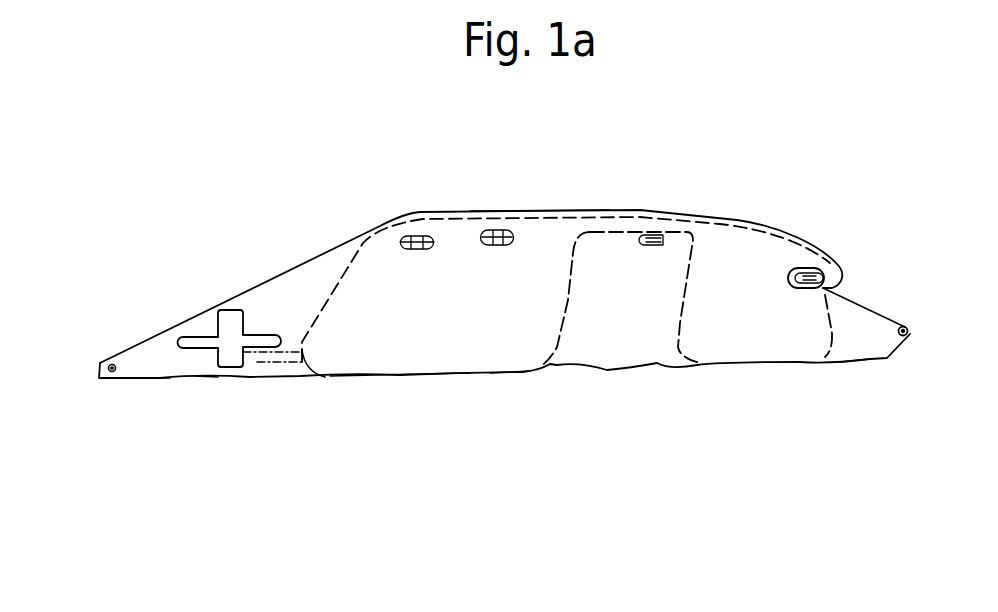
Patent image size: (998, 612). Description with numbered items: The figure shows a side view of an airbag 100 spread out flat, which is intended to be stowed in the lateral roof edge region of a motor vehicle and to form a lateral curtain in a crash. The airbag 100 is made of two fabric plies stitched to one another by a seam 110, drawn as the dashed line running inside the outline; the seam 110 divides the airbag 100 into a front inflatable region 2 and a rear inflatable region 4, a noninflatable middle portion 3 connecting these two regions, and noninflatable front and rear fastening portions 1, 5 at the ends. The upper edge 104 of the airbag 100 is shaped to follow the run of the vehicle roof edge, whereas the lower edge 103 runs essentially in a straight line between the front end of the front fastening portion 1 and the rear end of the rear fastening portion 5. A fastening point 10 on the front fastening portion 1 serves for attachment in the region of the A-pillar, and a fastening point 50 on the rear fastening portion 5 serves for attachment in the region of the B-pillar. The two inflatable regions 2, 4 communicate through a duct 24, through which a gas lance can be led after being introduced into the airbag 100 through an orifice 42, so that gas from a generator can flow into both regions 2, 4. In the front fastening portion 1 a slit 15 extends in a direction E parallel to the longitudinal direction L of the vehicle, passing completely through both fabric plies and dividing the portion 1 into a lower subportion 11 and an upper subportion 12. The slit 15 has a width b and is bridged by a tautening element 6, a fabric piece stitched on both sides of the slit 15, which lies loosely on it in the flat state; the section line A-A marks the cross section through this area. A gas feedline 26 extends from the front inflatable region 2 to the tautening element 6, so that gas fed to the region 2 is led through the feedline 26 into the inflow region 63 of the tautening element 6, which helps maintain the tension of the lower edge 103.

The airbag 100 is at (465, 320).
The upper edge 104 is at (540, 211).
The seam 110 is at (738, 221).
The duct 24 is at (641, 234).
The front inflatable region 2 is at (402, 358).
The lower edge 103 is at (513, 372).
The middle portion 3 is at (607, 355).
The rear inflatable region 4 is at (737, 352).
The rear fastening portion 5 is at (858, 347).
The orifice 42 is at (832, 273).
The fastening point 50 is at (908, 326).
The fastening point 10 is at (102, 365).
The front fastening portion 1 is at (163, 368).
The lower subportion 11 is at (210, 366).
The upper subportion 12 is at (239, 284).
The tautening element 6 is at (232, 325).
The slit 15 is at (190, 345).
The inflow region 63 is at (234, 357).
The gas feedline 26 is at (258, 360).
The width b is at (193, 373).
The section line A- A is at (230, 420).
The direction E is at (252, 315).
The longitudinal direction L is at (655, 548).